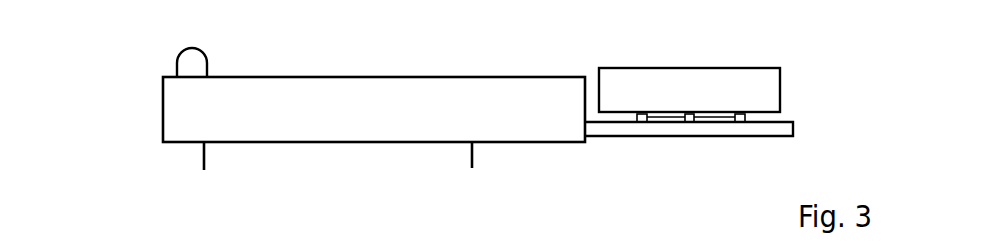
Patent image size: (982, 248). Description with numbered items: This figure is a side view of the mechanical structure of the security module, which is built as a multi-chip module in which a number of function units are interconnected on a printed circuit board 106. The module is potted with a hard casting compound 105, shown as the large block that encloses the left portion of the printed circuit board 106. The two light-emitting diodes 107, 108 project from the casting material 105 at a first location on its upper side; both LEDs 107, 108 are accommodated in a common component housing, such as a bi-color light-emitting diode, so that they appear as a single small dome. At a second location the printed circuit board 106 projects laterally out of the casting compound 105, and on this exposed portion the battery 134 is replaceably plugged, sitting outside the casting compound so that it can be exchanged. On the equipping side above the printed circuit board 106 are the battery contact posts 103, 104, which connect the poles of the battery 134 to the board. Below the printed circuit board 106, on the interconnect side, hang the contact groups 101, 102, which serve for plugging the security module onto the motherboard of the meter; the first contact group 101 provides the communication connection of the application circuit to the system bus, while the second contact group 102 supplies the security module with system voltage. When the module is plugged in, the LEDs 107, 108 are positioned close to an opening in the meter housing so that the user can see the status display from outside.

The first contact group 101 is at (338, 157).
The second contact group 102 is at (472, 152).
The battery contact post 103 is at (697, 113).
The battery contact post 104 is at (738, 122).
The casting compound 105 is at (173, 112).
The printed circuit board 106 is at (793, 125).
The light-emitting diode 107 is at (122, 61).
The light-emitting diode 108 is at (190, 67).
The battery 134 is at (780, 92).